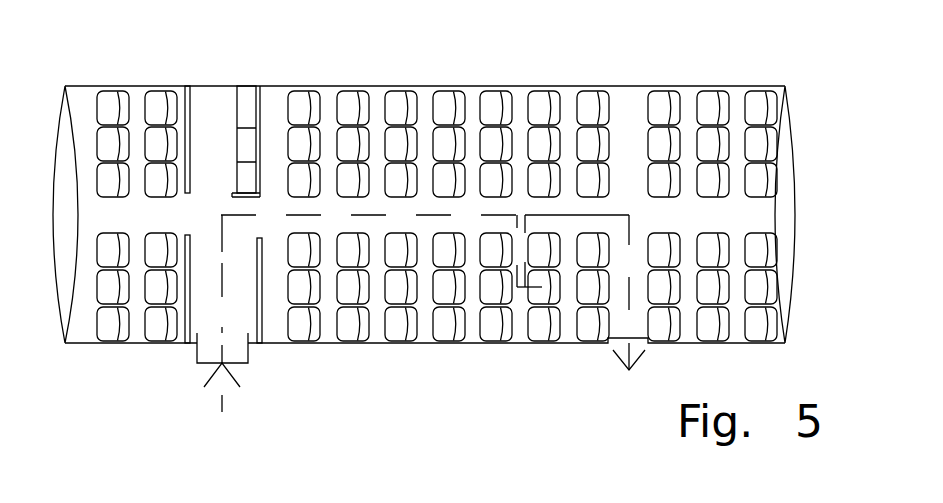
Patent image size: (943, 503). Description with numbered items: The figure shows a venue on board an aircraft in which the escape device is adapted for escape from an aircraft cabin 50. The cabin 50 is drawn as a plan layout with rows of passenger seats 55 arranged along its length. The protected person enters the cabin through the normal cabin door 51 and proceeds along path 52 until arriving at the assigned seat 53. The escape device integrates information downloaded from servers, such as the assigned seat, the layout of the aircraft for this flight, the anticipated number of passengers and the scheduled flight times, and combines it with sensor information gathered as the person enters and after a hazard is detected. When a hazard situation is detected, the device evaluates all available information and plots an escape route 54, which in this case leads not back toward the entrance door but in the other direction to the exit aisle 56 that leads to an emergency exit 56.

The aircraft cabin 50 is at (370, 85).
The normal cabin door 51 is at (232, 364).
The path 52 is at (220, 250).
The assigned seat 53 is at (542, 288).
The escape route 54 is at (599, 216).
The passenger seats 55 is at (437, 216).
The exit aisle 56 is at (643, 344).